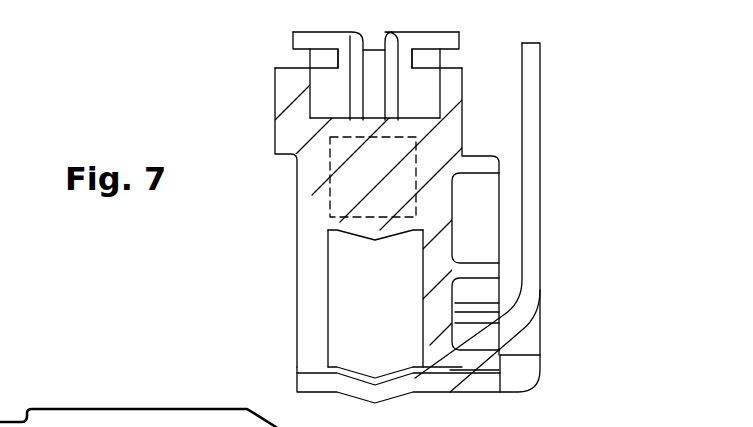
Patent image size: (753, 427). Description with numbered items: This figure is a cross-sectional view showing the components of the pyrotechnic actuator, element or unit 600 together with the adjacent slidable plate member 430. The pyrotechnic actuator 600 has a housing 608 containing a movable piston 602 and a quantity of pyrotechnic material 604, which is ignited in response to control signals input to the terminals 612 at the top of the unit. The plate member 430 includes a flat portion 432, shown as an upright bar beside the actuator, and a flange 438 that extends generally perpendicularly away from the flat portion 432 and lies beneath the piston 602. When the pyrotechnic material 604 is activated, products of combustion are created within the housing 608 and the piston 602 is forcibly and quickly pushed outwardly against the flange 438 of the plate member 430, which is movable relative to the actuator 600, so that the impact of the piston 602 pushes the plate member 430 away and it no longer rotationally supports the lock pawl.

The pyrotechnic actuator 600 is at (258, 161).
The movable piston 602 is at (363, 290).
The pyrotechnic material 604 is at (345, 174).
The housing 608 is at (330, 230).
The terminals 612 is at (356, 43).
The plate member 430 is at (513, 217).
The flat portion 432 is at (533, 115).
The flange 438 is at (342, 387).